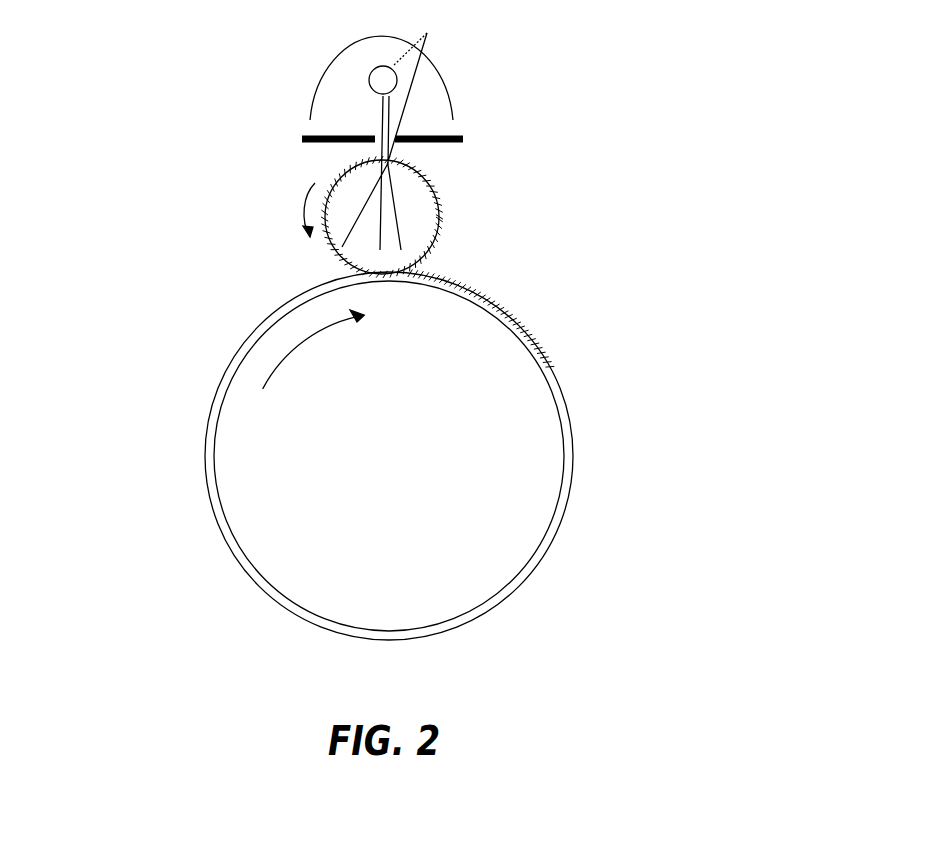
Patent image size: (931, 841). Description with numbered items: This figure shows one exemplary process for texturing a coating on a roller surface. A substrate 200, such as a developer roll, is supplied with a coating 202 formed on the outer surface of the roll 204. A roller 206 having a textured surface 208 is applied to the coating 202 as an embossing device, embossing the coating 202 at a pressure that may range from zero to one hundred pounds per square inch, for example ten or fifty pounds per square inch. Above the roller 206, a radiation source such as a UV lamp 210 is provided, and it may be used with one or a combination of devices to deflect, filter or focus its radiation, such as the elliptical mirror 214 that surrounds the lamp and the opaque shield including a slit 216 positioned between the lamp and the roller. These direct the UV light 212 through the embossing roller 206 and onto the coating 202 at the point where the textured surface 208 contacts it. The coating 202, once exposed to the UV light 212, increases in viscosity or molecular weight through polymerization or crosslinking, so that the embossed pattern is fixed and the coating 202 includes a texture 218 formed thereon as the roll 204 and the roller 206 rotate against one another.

The substrate 200 is at (608, 553).
The coating 202 is at (202, 433).
The roll 204 is at (350, 502).
The roller 206 is at (418, 220).
The textured surface 208 is at (347, 178).
The UV lamp 210 is at (363, 77).
The UV light 212 is at (362, 223).
The elliptical mirror 214 is at (427, 33).
The opaque shield including a slit 216 is at (470, 140).
The texture 218 is at (493, 288).